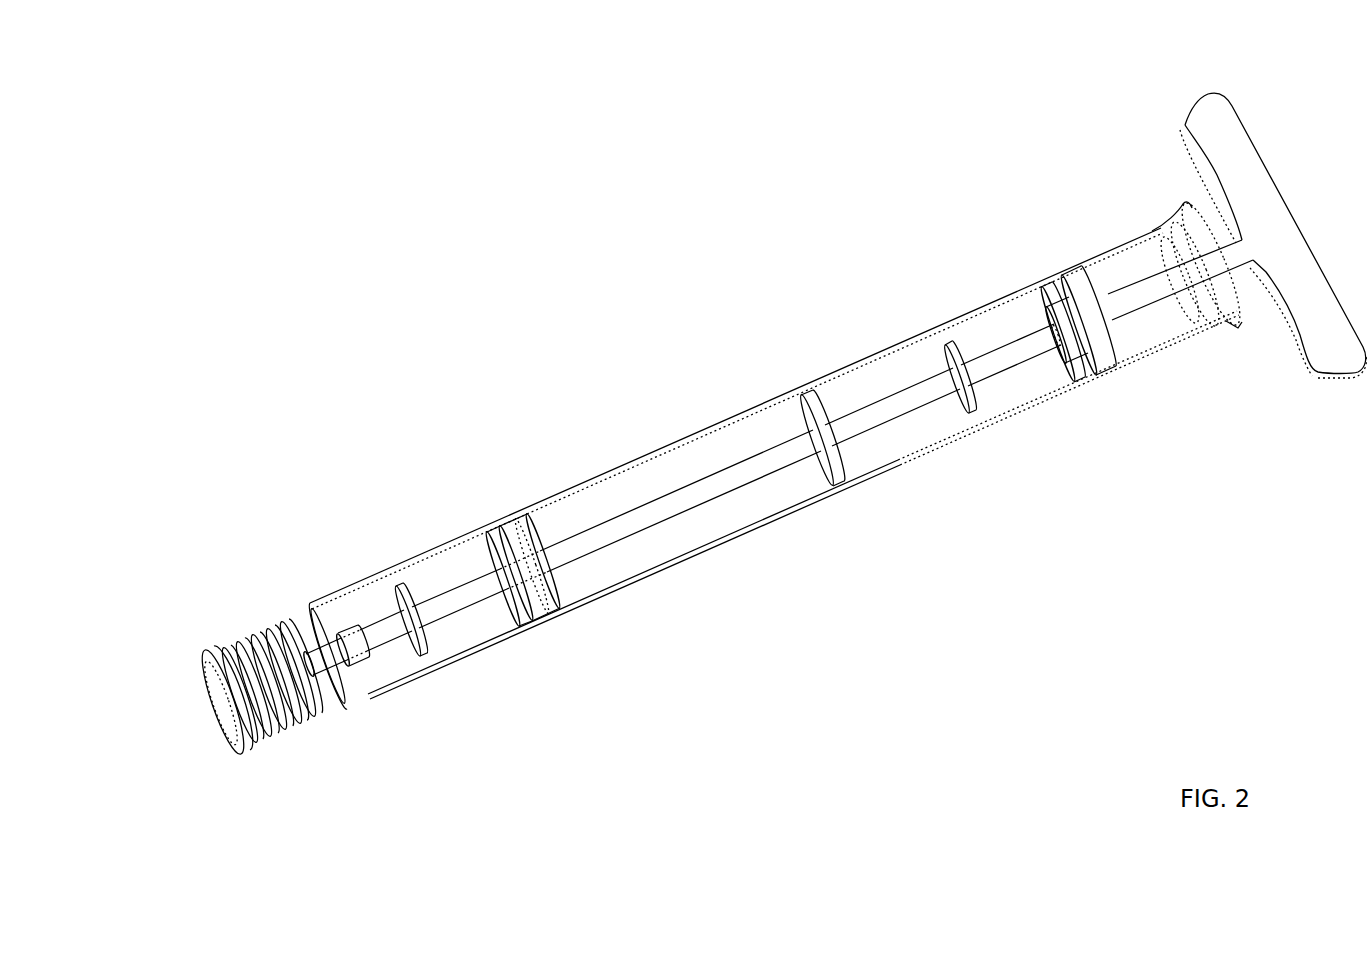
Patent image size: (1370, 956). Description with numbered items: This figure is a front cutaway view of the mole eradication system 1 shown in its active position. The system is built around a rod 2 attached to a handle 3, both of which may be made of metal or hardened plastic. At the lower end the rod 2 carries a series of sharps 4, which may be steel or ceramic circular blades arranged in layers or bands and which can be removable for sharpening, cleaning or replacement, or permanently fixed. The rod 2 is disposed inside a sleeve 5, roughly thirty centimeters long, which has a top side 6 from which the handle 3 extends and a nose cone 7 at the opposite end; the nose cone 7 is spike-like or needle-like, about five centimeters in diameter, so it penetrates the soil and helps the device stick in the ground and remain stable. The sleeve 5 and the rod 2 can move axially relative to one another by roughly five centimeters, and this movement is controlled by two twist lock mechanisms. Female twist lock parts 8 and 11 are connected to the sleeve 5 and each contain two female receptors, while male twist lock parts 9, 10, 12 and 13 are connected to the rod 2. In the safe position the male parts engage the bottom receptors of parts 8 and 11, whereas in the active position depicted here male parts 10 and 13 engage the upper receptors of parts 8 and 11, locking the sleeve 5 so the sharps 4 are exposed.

The mole eradication system 1 is at (652, 133).
The rod 2 is at (877, 402).
The handle 3 is at (1193, 102).
The sharps 4 is at (278, 623).
The sleeve 5 is at (677, 437).
The top side 6 is at (1173, 207).
The nose cone 7 is at (195, 698).
The female twist lock part 8 is at (525, 612).
The male twist lock part 9 is at (397, 592).
The male twist lock part 10 is at (527, 535).
The female twist lock part 11 is at (1085, 366).
The male twist lock part 12 is at (960, 360).
The male twist lock part 13 is at (1110, 317).